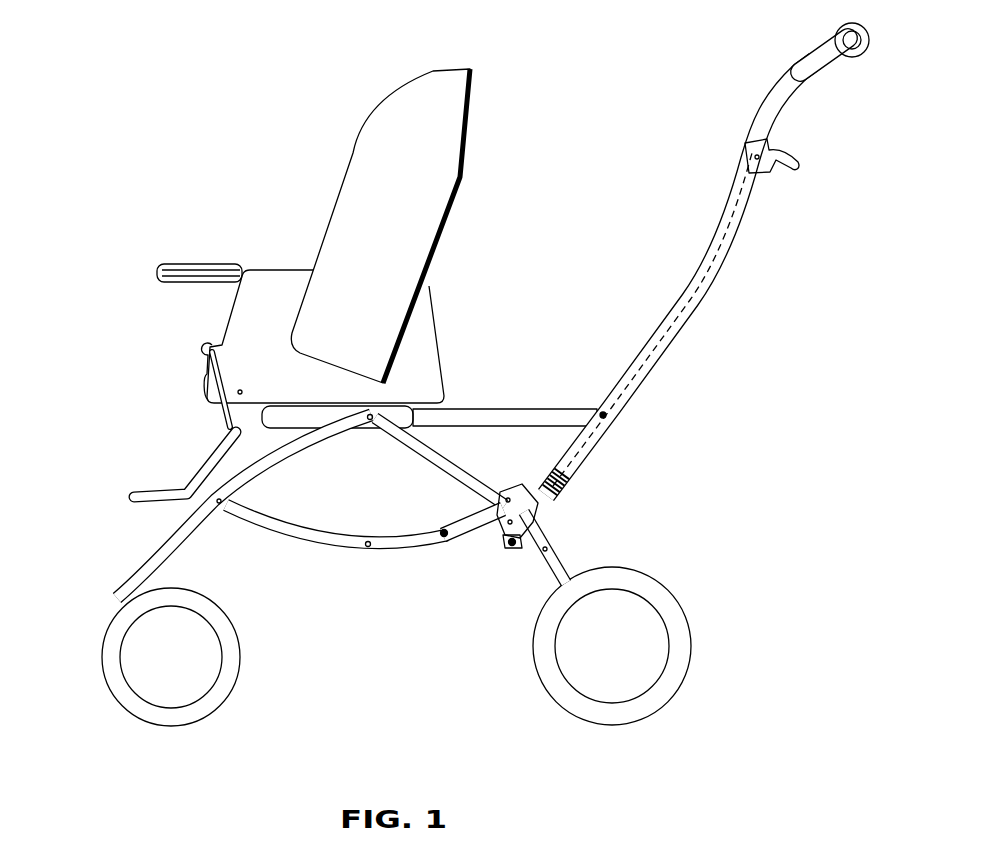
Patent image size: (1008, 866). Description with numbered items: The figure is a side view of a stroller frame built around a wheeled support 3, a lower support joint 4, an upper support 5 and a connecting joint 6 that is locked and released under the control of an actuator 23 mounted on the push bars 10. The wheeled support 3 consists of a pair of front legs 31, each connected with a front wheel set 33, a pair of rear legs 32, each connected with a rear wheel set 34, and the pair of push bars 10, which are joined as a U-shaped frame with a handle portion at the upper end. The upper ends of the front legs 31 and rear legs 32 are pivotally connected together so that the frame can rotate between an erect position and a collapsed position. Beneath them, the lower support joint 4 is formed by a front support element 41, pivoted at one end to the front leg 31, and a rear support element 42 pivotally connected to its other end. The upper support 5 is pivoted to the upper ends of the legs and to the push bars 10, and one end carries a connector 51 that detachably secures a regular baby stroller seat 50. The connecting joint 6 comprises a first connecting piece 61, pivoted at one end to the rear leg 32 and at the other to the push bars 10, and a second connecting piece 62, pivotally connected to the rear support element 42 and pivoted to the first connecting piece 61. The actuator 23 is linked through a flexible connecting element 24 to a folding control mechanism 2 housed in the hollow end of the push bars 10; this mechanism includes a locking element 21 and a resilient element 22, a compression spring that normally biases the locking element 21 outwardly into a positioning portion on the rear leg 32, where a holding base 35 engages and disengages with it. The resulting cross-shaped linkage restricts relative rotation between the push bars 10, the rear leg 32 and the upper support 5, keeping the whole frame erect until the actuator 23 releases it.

The folding control mechanism 2 is at (560, 485).
The wheeled support 3 is at (157, 542).
The lower support joint 4 is at (322, 553).
The upper support 5 is at (496, 417).
The connecting joint 6 is at (478, 560).
The push bars 10 is at (697, 297).
The locking element 21 is at (522, 481).
The resilient element 22 is at (550, 455).
The actuator 23 is at (802, 160).
The flexible connecting element 24 is at (705, 262).
The front legs 31 is at (197, 525).
The rear legs 32 is at (440, 450).
The front wheel set 33 is at (103, 658).
The rear wheel set 34 is at (690, 630).
The holding base 35 is at (535, 523).
The front support element 41 is at (298, 533).
The rear support element 42 is at (386, 550).
The baby stroller seat 50 is at (237, 305).
The connector 51 is at (267, 425).
The first connecting piece 61 is at (516, 550).
The second connecting piece 62 is at (449, 528).